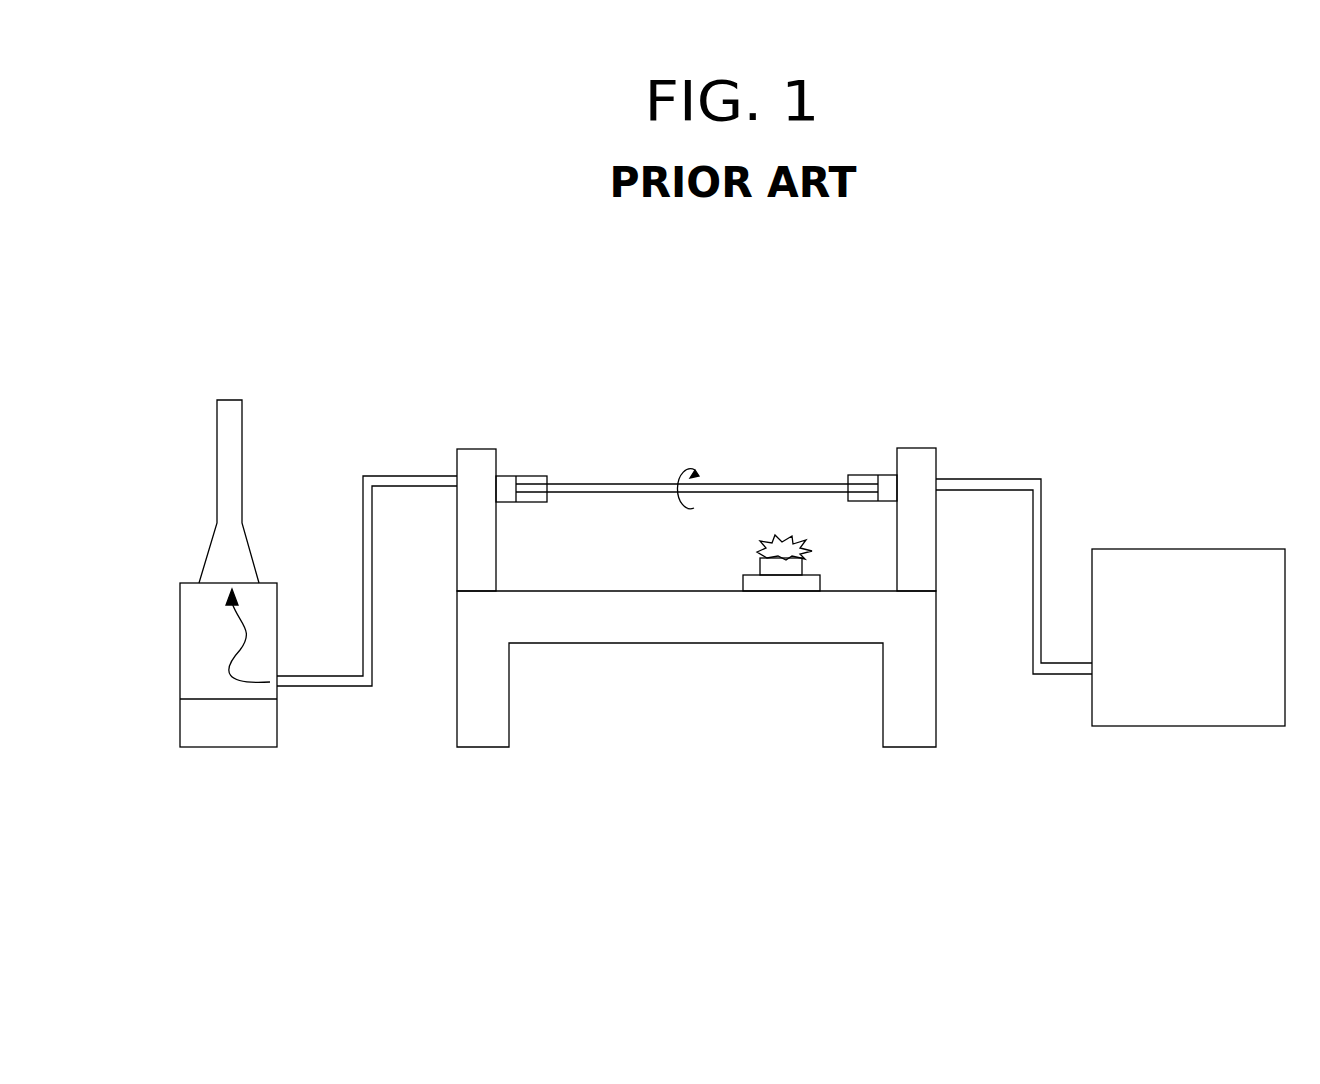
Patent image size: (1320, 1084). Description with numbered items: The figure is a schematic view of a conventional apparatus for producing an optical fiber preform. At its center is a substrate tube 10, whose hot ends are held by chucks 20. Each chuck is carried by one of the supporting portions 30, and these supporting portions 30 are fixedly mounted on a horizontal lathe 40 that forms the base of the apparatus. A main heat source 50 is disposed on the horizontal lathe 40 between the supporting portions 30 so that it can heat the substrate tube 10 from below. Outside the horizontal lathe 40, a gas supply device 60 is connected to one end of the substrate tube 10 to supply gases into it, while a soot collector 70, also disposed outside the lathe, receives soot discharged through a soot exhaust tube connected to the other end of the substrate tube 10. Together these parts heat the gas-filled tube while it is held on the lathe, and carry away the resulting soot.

The substrate tube 10 is at (618, 482).
The chucks 20 is at (863, 475).
The supporting portions 30 is at (930, 465).
The horizontal lathe 40 is at (895, 712).
The main heat source 50 is at (772, 566).
The gas supply device 60 is at (1129, 568).
The soot collector 70 is at (180, 680).